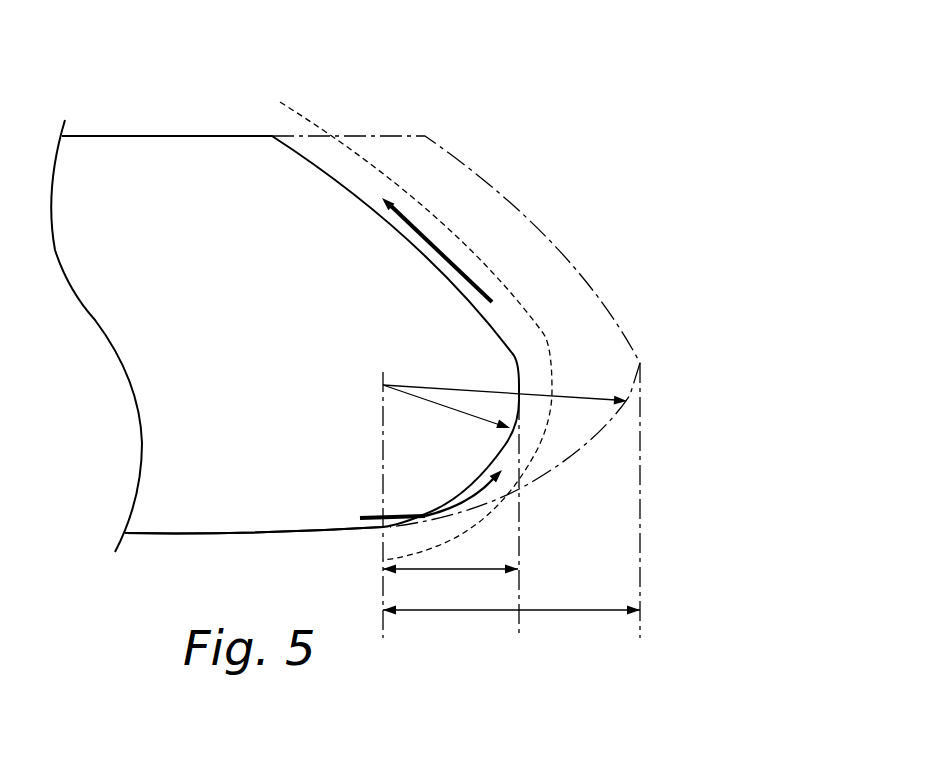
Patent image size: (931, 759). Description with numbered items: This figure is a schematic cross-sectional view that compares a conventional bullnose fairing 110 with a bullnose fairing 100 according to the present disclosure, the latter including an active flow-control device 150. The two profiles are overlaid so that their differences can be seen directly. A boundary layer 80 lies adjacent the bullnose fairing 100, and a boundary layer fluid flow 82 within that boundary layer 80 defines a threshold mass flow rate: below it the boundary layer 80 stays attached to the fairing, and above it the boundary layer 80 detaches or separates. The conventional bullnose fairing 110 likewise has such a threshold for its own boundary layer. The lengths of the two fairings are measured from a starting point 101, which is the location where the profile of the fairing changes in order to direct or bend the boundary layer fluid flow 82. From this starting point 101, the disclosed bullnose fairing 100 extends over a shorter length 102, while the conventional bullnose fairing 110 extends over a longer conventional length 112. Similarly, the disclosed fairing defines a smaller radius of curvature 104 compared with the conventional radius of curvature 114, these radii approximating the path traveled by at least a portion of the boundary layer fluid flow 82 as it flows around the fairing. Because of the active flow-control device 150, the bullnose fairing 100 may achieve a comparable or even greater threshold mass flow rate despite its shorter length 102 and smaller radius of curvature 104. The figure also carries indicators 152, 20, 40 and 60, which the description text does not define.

The bullnose fairing 100 is at (187, 135).
The starting point 101 is at (380, 530).
The conventional bullnose fairing 110 is at (361, 136).
The boundary layer 80 is at (405, 195).
The boundary layer fluid flow 82 is at (442, 253).
The conventional radius of curvature 114 is at (447, 388).
The radius of curvature 104 is at (437, 407).
The active flow-control device 150 is at (423, 500).
The direction of rotation 152 is at (465, 502).
The length 102 is at (433, 570).
The conventional length 112 is at (567, 612).
The first air flow 20 is at (630, 145).
The second air flow 40 is at (658, 185).
The third air flow 60 is at (683, 227).